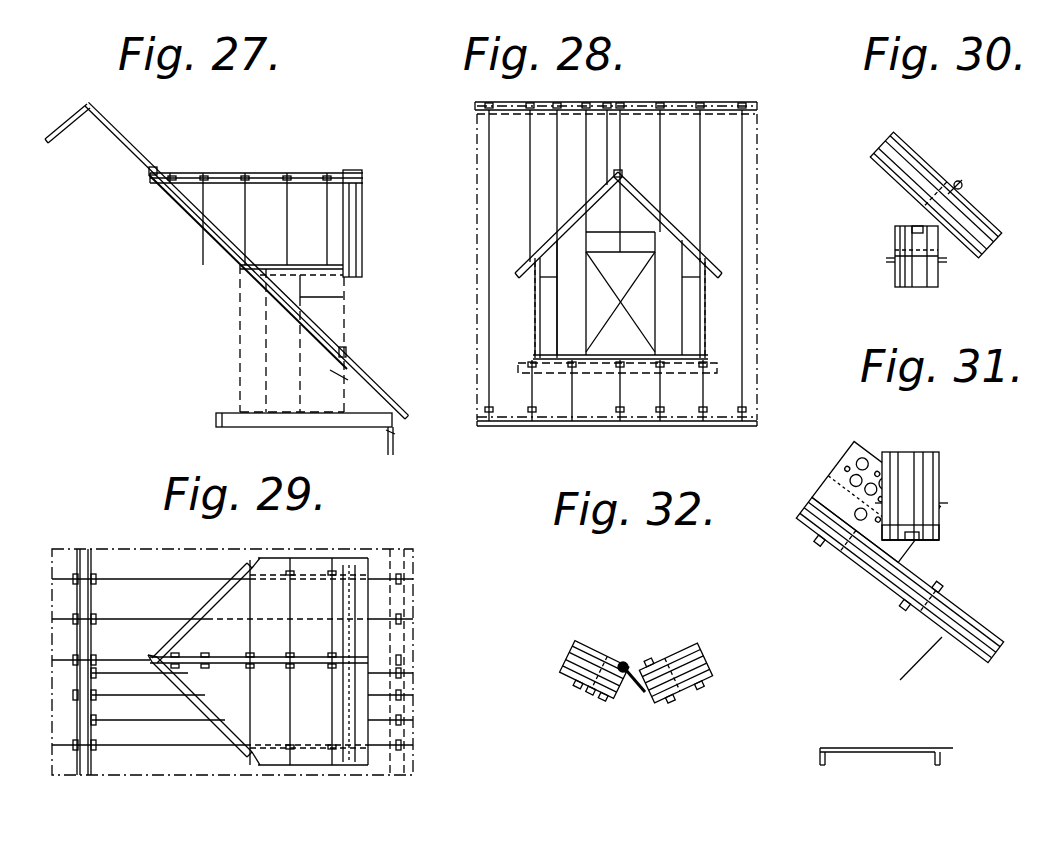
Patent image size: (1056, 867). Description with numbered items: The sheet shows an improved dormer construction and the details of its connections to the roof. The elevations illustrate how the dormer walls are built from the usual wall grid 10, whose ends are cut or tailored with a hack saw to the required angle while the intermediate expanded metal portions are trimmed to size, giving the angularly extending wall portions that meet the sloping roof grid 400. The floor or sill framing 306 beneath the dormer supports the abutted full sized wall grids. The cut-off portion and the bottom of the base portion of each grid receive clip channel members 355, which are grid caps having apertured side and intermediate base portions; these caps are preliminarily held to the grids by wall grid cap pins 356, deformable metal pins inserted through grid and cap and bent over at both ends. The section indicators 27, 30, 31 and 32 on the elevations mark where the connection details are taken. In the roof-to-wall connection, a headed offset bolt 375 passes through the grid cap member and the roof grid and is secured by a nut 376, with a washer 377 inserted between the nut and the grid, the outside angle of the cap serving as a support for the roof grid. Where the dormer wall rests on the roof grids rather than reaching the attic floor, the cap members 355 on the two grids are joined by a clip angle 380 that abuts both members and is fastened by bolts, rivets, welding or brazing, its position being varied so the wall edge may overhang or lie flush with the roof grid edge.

In FIG. 27, the wall grid 10 is at (330, 316).
In FIG. 28, the wall grid 10 is at (708, 296).
In FIG. 29, the wall grid 10 is at (259, 661).
In FIG. 30, the wall grid 10 is at (940, 270).
In FIG. 31, the wall grid 10 is at (942, 477).
In FIG. 28, the section line of Fig. 27 is at (620, 74).
In FIG. 27, the section line of Fig. 30 is at (340, 253).
In FIG. 29, the section line of Fig. 31 is at (312, 598).
In FIG. 29, the section line of Fig. 32 is at (239, 716).
In FIG. 28, the floor frame / sill beam 306 is at (488, 404).
In FIG. 29, the floor frame / sill beam 306 is at (232, 662).
In FIG. 27, the clip channel member 355 is at (348, 356).
In FIG. 30, the clip channel member 355 is at (890, 260).
In FIG. 31, the clip channel member 355 is at (940, 527).
In FIG. 32, the clip channel member 355 is at (650, 655).
In FIG. 30, the wall grid cap pin 356 is at (905, 250).
In FIG. 31, the wall grid cap pin 356 is at (940, 536).
In FIG. 30, the headed offset bolt 375 is at (915, 220).
In FIG. 30, the nut 376 is at (966, 186).
In FIG. 30, the washer 377 is at (955, 196).
In FIG. 31, the clip angle 380 is at (880, 542).
In FIG. 32, the clip angle 380 is at (626, 662).
In FIG. 27, the rafter beam 400 is at (227, 260).
In FIG. 28, the rafter beam 400 is at (745, 158).
In FIG. 29, the rafter beam 400 is at (195, 615).
In FIG. 30, the rafter beam 400 is at (918, 150).
In FIG. 31, the rafter beam 400 is at (962, 606).